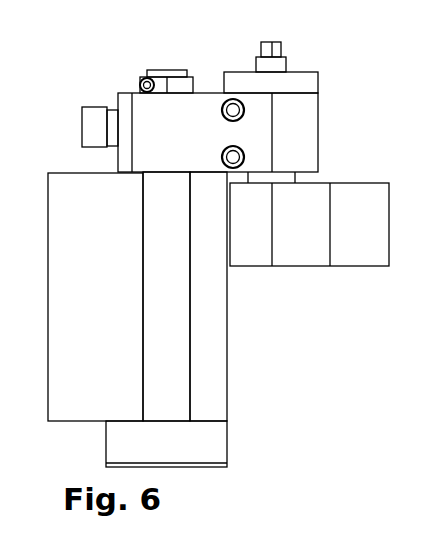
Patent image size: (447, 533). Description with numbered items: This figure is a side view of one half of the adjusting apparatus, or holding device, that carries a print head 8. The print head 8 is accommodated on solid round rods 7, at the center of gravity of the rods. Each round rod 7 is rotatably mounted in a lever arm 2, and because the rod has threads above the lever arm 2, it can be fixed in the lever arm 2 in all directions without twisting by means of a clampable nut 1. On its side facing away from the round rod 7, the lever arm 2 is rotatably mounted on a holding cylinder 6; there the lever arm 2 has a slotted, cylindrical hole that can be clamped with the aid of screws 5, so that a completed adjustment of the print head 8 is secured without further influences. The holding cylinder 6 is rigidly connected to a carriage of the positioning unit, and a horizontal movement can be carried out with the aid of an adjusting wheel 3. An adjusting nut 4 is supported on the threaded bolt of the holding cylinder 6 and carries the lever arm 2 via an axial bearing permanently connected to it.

The clampable nut 1 is at (146, 83).
The lever arm 2 is at (148, 108).
The adjusting wheel 3 is at (92, 130).
The adjusting nut 4 is at (272, 47).
The screw 5 is at (247, 153).
The holding cylinder 6 is at (290, 227).
The round rod 7 is at (172, 387).
The print head 8 is at (210, 397).